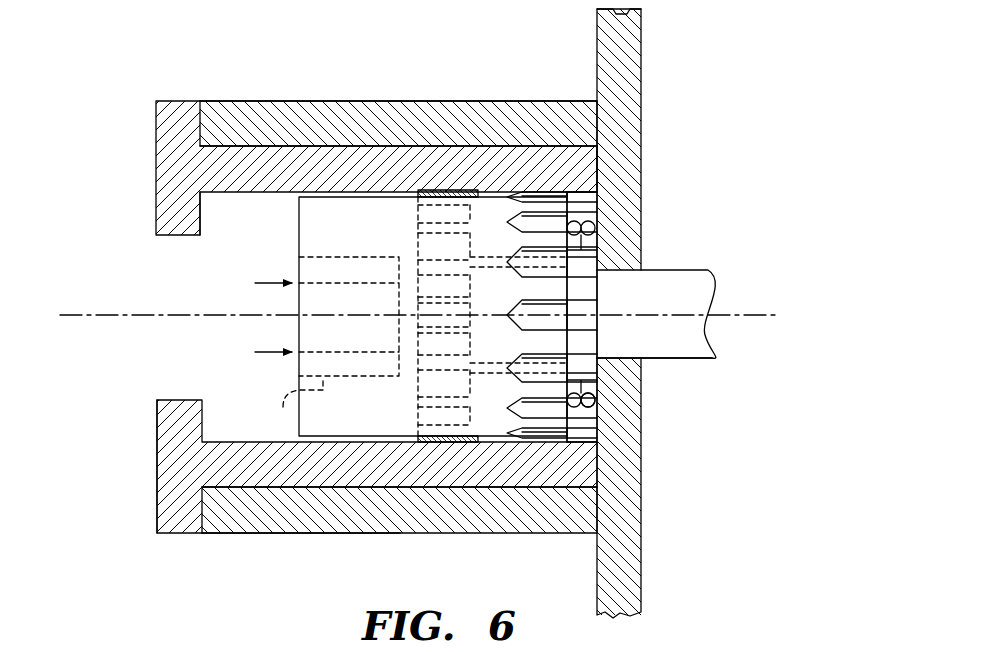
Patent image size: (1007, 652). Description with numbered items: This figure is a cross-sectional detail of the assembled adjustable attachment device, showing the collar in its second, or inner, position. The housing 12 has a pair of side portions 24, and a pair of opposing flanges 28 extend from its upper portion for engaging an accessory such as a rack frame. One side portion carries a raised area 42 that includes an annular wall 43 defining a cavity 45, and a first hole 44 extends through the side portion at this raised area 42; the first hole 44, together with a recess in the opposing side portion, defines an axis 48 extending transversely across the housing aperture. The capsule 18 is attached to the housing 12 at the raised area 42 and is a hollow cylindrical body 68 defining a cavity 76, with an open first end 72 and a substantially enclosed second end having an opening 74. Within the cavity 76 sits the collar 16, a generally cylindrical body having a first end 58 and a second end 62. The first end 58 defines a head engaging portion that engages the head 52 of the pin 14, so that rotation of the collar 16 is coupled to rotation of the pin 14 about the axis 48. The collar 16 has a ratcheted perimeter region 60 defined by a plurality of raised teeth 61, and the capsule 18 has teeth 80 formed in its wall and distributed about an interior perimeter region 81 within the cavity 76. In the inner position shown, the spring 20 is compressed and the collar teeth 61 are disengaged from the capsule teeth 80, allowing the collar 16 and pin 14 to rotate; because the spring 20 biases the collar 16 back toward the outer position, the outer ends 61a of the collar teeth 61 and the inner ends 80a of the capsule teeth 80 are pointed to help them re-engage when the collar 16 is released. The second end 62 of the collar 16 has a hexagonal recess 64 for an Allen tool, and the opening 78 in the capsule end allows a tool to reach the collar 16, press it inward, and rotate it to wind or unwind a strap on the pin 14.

The housing 12 is at (646, 38).
The pin 14 is at (688, 266).
The collar 16 is at (511, 195).
The capsule 18 is at (152, 157).
The spring 20 is at (597, 405).
The side portions 24 is at (596, 42).
The flanges 28 is at (431, 645).
The raised area 42 is at (293, 145).
The annular wall 43 is at (310, 101).
The first hole 44 is at (613, 358).
The cavity 45 is at (292, 533).
The axis 48 is at (746, 314).
The head 52 is at (613, 393).
The first end 58 is at (600, 238).
The ratcheted perimeter region 60 is at (544, 194).
The teeth 61 is at (545, 438).
The outer ends 61a is at (523, 403).
The second end 62 is at (299, 233).
The hexagonal recess 64 is at (295, 401).
The cylindrical body 68 is at (333, 533).
The open first end 72 is at (598, 172).
The opening 74 is at (157, 493).
The cavity 76 is at (203, 193).
The opening 78 is at (184, 400).
The teeth 80 is at (437, 190).
The inner ends 80a is at (496, 185).
The interior perimeter region 81 is at (443, 442).